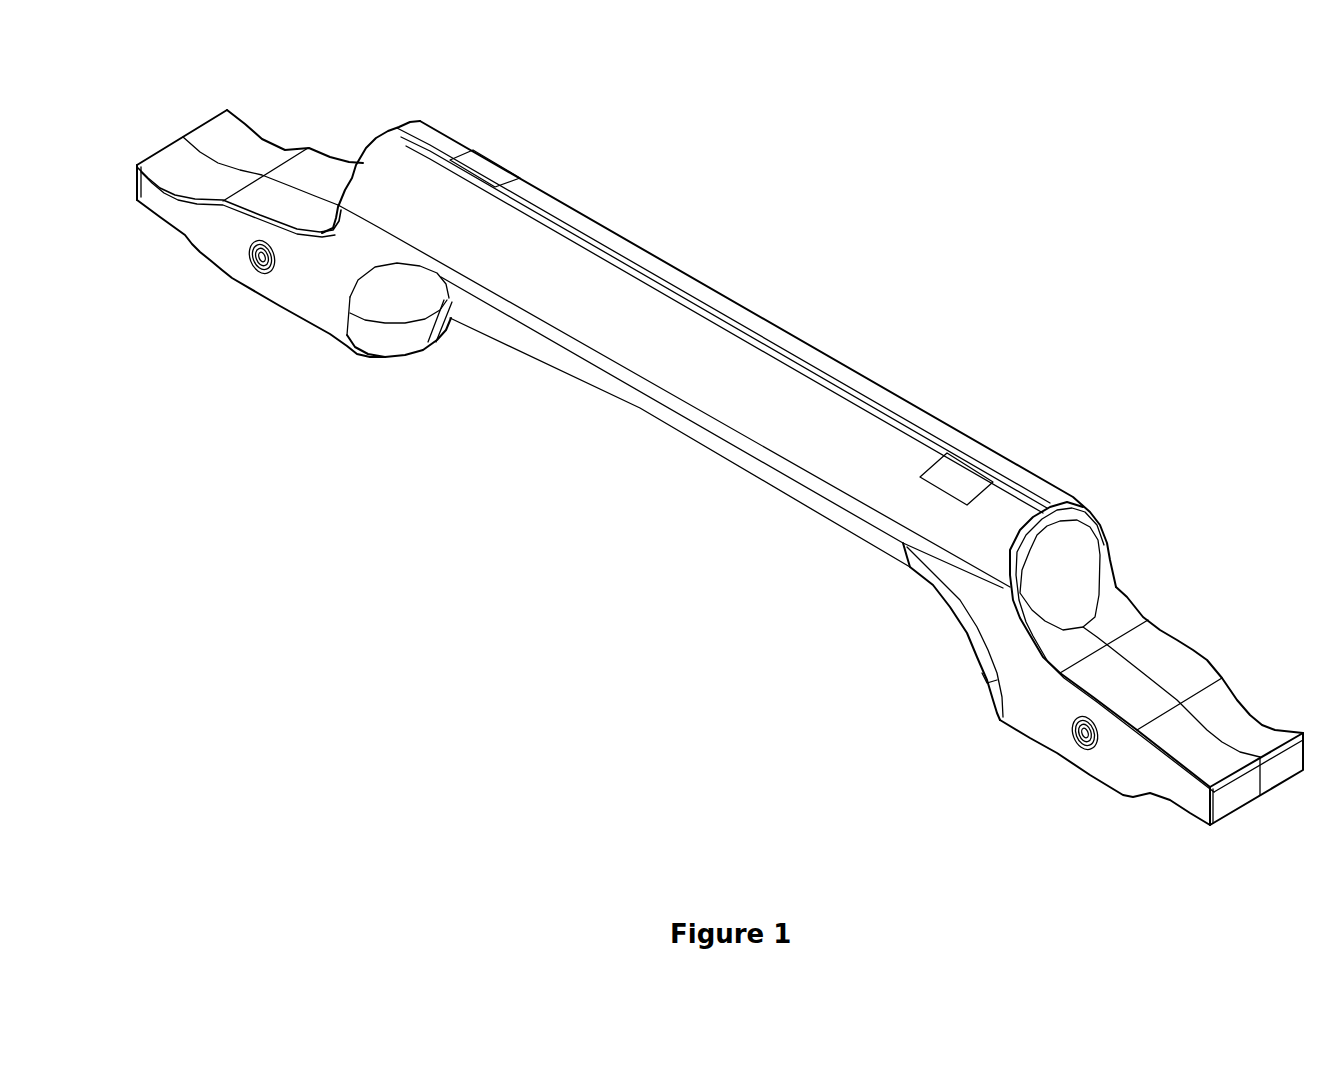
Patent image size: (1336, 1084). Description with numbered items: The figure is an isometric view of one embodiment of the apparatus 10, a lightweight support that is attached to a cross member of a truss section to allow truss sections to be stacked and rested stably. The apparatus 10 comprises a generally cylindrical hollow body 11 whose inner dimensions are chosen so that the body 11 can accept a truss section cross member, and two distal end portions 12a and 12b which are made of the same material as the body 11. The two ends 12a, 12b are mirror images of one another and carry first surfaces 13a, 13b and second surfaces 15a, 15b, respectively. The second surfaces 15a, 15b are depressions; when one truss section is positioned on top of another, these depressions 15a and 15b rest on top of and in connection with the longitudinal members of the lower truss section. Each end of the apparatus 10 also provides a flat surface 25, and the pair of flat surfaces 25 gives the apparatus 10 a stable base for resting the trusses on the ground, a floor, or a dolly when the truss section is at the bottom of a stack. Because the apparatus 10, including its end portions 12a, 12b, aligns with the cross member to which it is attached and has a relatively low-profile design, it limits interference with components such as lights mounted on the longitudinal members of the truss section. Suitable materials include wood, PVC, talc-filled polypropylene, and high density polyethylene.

The apparatus 10 is at (921, 342).
The generally cylindrical hollow body 11 is at (698, 339).
The distal end portion 12a is at (304, 314).
The distal end portion 12b is at (1015, 722).
The first surface 13a is at (225, 145).
The first surface 13b is at (1231, 716).
The second surface 15a is at (185, 261).
The second surface 15b is at (1140, 819).
The flat surface 25 is at (311, 342).